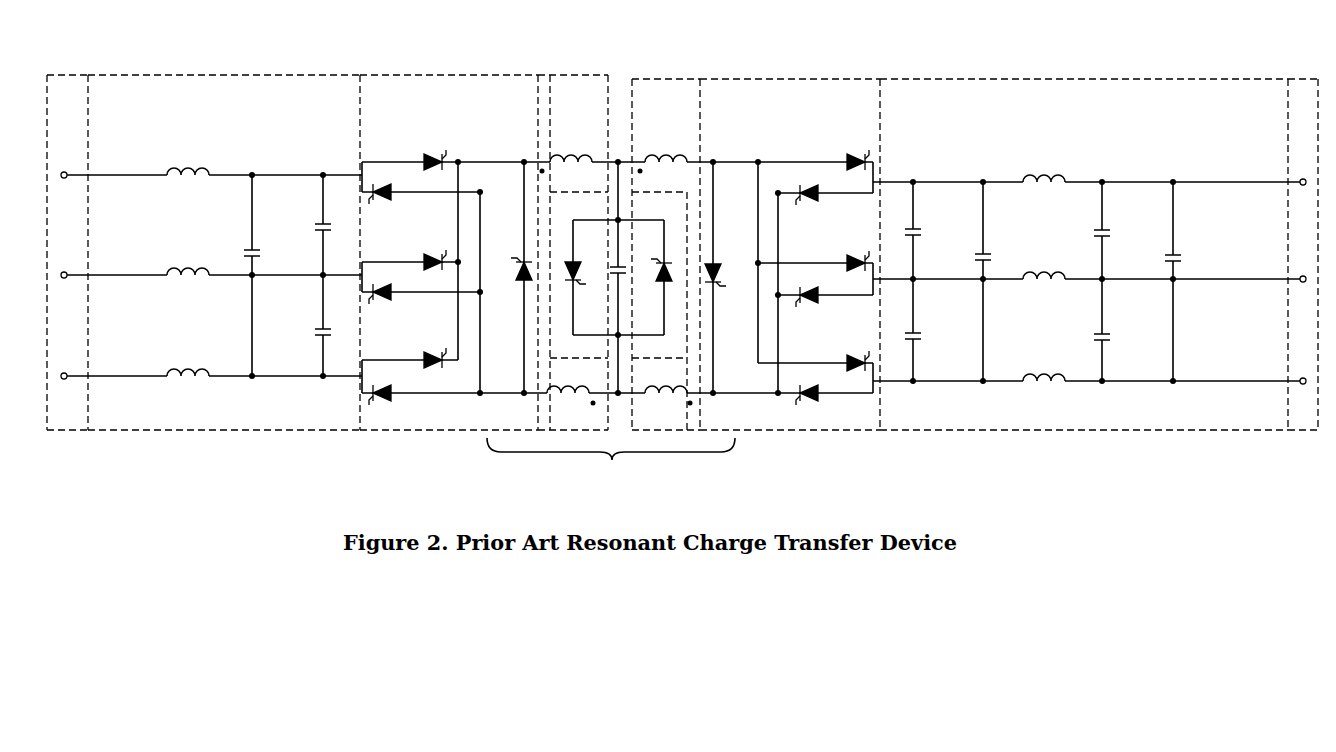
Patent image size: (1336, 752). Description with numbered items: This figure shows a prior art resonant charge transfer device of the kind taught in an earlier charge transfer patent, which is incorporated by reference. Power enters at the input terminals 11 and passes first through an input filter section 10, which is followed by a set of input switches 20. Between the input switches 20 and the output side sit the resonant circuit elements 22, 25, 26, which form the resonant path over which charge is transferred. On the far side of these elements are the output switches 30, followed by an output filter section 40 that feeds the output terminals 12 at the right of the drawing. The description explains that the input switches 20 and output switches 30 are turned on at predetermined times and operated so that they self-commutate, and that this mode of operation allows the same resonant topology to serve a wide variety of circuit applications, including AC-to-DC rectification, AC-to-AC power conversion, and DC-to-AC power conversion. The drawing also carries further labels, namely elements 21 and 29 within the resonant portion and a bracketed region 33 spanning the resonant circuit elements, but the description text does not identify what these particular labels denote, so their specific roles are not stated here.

The input terminals 11 is at (68, 75).
The input filter section 10 is at (233, 75).
The input switches 20 is at (412, 76).
The resonant circuit elements 22 is at (567, 76).
The resonant circuit elements 26 is at (680, 78).
The output switches 30 is at (812, 78).
The output filter section 40 is at (1118, 79).
The output terminals 12 is at (1308, 80).
The switch Swor 21 is at (571, 260).
The resonant circuit elements 25 is at (623, 262).
The switch Swo 29 is at (667, 256).
The resonant charge transfer section 33 is at (611, 465).